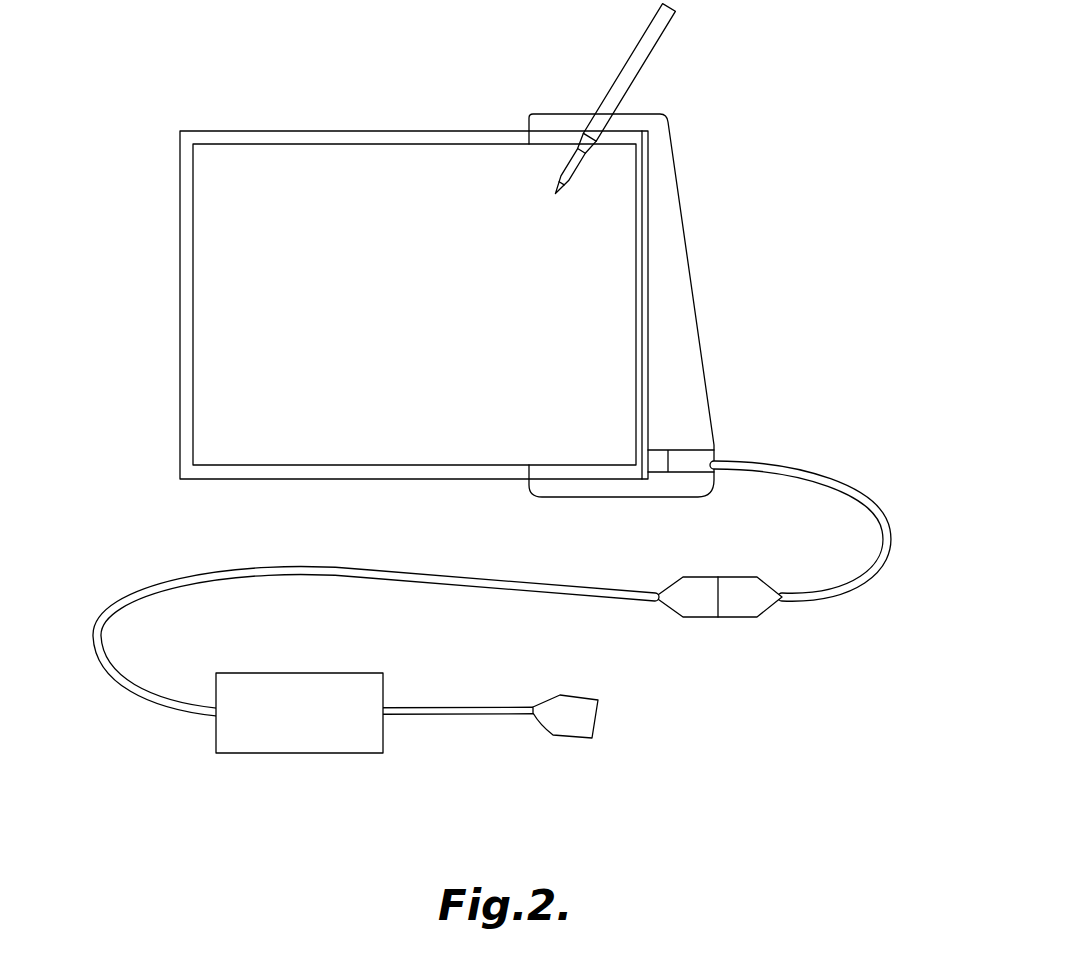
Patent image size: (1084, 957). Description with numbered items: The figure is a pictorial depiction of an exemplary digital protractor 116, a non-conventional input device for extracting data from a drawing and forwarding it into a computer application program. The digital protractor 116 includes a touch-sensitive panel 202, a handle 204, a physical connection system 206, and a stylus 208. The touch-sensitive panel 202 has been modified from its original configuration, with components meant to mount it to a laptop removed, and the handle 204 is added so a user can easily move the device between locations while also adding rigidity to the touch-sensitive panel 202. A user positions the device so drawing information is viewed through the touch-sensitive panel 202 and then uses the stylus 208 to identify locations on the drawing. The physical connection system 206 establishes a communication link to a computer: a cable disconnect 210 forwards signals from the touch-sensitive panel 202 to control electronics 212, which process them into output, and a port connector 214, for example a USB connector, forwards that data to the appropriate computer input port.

The digital protractor 116 is at (267, 83).
The touch-sensitive panel 202 is at (608, 350).
The handle 204 is at (675, 237).
The stylus 208 is at (647, 65).
The cable disconnect 210 is at (886, 512).
The physical connection system 206 is at (116, 703).
The control electronics 212 is at (383, 743).
The port connector 214 is at (573, 738).